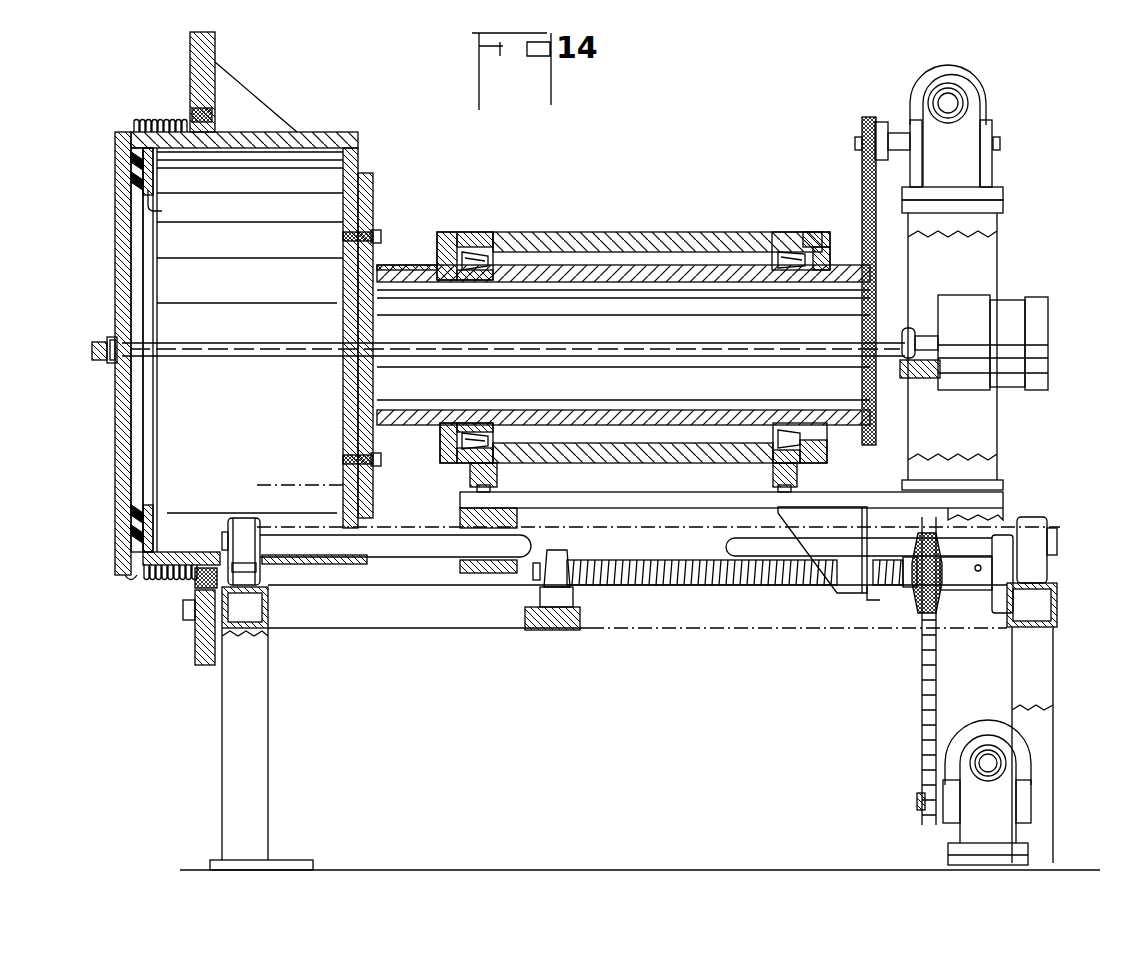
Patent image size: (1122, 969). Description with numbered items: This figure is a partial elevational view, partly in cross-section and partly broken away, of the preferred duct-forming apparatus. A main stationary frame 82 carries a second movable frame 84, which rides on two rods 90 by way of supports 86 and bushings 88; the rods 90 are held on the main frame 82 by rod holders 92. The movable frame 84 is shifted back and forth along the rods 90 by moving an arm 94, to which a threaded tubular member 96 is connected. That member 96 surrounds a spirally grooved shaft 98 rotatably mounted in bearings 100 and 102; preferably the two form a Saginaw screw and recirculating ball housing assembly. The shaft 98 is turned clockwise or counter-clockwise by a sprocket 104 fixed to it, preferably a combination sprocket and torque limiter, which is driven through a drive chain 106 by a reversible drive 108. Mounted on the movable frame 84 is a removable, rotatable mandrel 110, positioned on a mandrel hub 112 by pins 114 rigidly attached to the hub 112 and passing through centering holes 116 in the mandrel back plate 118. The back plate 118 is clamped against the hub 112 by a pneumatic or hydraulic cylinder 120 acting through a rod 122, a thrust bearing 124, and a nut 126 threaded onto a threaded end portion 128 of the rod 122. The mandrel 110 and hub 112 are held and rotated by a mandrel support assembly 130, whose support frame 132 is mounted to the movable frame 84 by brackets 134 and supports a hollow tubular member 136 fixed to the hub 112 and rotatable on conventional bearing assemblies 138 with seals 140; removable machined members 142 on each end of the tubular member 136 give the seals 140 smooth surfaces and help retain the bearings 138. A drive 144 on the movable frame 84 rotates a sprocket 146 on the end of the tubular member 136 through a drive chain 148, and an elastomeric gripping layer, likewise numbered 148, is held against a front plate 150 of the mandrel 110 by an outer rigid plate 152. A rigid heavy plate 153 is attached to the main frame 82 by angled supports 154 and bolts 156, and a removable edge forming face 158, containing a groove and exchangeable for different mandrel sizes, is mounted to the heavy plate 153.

The main stationary frame 82 is at (1045, 660).
The second movable frame 84 is at (985, 497).
The supports 86 is at (985, 520).
The bushings 88 is at (462, 570).
The rods 90 is at (388, 533).
The rod holders 92 is at (1057, 525).
The arm 94 is at (847, 552).
The threaded tubular member 96 is at (873, 594).
The spirally grooved shaft 98 is at (692, 585).
The bearing 100 is at (545, 582).
The bearing 102 is at (975, 595).
The sprocket 104 is at (920, 568).
The drive chain 106 is at (922, 745).
The reversible drive 108 is at (1010, 822).
The mandrel 110 is at (170, 552).
The mandrel hub 112 is at (372, 182).
The pins 114 is at (381, 462).
The centering holes 116 is at (343, 458).
The back plate 118 is at (343, 276).
The pneumatic or hydraulic cylinder 120 is at (1003, 305).
The rod 122 is at (222, 343).
The thrust bearing 124 is at (112, 340).
The nut 126 is at (105, 345).
The threaded end portion 128 is at (92, 349).
The mandrel support assembly 130 is at (697, 160).
The support frame 132 is at (672, 232).
The brackets 134 is at (773, 470).
The hollow tubular member 136 is at (405, 410).
The bearing assemblies 138 is at (783, 250).
The seals 140 is at (445, 437).
The removable machined members 142 is at (398, 264).
The drive 144 is at (965, 117).
The sprocket 146 is at (887, 260).
The drive chain 148 is at (862, 195).
The front plate 150 is at (173, 205).
The outer rigid plate 152 is at (115, 150).
The rigid heavy plate 153 is at (215, 50).
The angled supports 154 is at (242, 98).
The bolts 156 is at (183, 610).
The removable edge forming face 158 is at (196, 578).